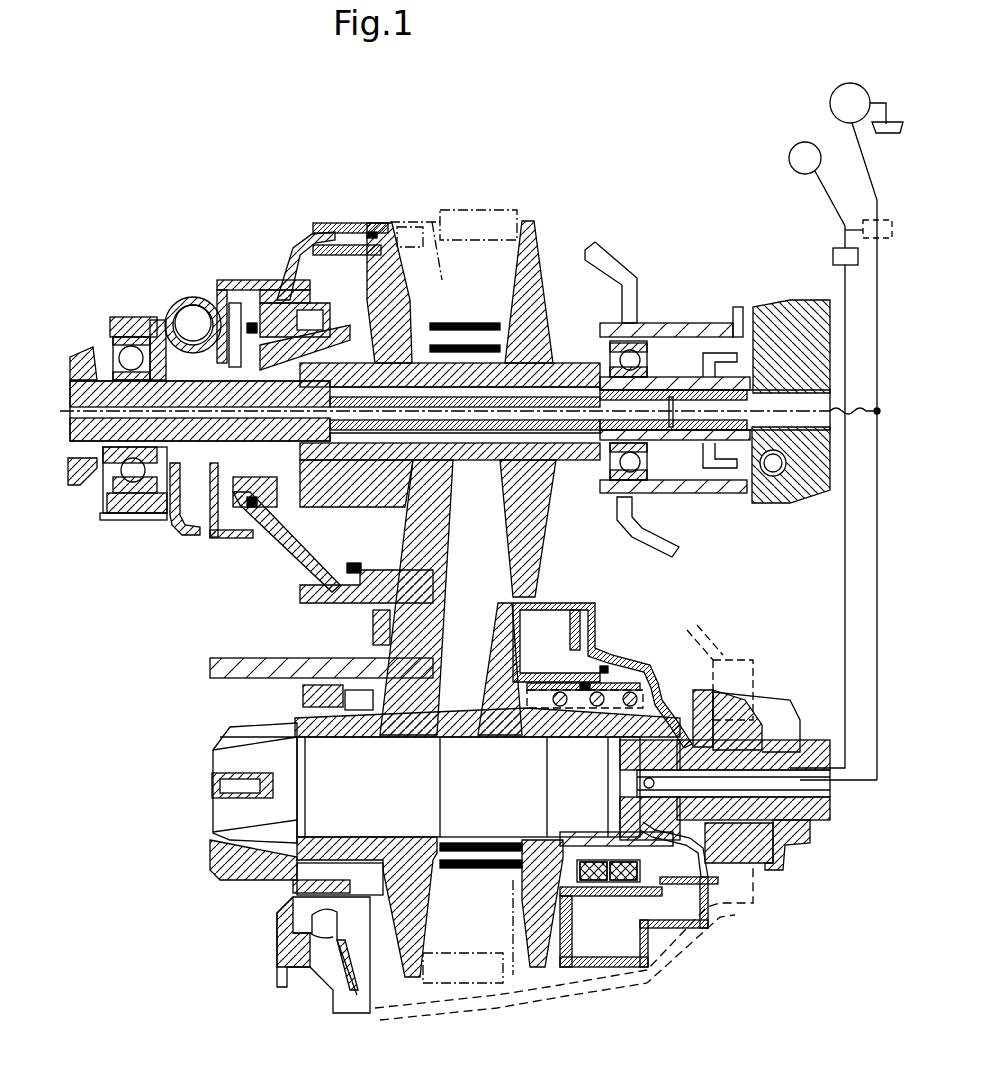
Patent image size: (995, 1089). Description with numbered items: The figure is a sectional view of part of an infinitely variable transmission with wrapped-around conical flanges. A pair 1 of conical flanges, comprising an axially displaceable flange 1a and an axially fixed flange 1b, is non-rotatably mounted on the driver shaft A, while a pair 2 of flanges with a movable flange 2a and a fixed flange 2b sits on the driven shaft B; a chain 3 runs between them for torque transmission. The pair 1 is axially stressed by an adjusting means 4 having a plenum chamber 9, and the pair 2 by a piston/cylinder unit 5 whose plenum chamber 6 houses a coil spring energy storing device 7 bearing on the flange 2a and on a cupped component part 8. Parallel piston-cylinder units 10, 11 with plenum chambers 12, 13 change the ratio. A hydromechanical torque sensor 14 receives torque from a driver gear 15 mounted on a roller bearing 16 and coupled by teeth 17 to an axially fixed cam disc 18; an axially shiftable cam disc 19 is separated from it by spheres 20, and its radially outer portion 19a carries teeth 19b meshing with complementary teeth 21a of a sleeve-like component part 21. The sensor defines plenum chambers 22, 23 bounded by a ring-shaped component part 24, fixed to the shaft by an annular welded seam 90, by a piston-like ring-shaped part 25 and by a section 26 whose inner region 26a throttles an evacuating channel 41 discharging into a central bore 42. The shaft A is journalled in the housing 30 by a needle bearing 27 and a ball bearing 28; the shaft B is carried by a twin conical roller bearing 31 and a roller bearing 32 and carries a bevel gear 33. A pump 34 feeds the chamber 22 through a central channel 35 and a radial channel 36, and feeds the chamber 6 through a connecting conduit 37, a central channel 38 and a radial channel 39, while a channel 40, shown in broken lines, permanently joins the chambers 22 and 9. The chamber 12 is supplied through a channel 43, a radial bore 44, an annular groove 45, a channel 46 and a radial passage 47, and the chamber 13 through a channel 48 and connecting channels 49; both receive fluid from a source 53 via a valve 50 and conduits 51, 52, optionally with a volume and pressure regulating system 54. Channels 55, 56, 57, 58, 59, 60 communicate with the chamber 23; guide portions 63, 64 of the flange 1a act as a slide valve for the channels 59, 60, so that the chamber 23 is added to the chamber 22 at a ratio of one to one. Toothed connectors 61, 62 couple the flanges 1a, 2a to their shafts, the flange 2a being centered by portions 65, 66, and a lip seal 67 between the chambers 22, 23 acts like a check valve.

The pair of conical flanges 1 is at (466, 575).
The axially displaceable conical flange 1a is at (358, 278).
The axially fixed conical flange 1b is at (505, 258).
The pair of conical flanges 2 is at (473, 990).
The axially movable conical flange 2a is at (533, 885).
The axially fixed conical flange 2b is at (413, 937).
The chain 3 is at (455, 870).
The adjusting means 4 is at (318, 560).
The adjusting means 5 is at (601, 672).
The plenum chamber 6 is at (690, 648).
The energy storing device 7 is at (648, 665).
The cupped component part 8 is at (646, 790).
The plenum chamber 9 is at (392, 548).
The piston-cylinder unit 10 is at (318, 228).
The piston-cylinder unit 11 is at (592, 592).
The plenum chamber 12 is at (398, 260).
The plenum chamber 13 is at (541, 623).
The torque sensor 14 is at (170, 560).
The driver gear 15 is at (128, 320).
The roller bearing 16 is at (118, 340).
The teeth 17 is at (157, 520).
The cam disc 18 is at (190, 300).
The cam disc 19 is at (232, 300).
The radially outer portion 19a is at (248, 282).
The teeth 19b is at (248, 540).
The spheres 20 is at (193, 318).
The sleeve-like component part 21 is at (345, 252).
The complementary teeth 21a is at (258, 282).
The plenum chamber 22 is at (222, 282).
The plenum chamber 23 is at (275, 303).
The ring-shaped component part 24 is at (310, 248).
The ring-shaped component part 25 is at (232, 305).
The component part 26 is at (152, 320).
The inner region 26a is at (160, 340).
The needle bearing 27 is at (80, 350).
The ball bearing 28 is at (628, 348).
The housing 30 is at (317, 907).
The twin conical roller bearing 31 is at (735, 862).
The roller bearing 32 is at (317, 868).
The bevel gear 33 is at (232, 815).
The pump 34 is at (850, 83).
The central channel 35 is at (650, 372).
The radial channel 36 is at (195, 530).
The connecting conduit 37 is at (866, 782).
The central channel 38 is at (822, 782).
The radially extending channel 39 is at (649, 833).
The channel 40 is at (240, 295).
The evacuating channel 41 is at (112, 470).
The central bore 42 is at (60, 435).
The channel 43 is at (608, 470).
The radial bore 44 is at (322, 462).
The annular groove 45 is at (257, 548).
The channel 46 is at (370, 232).
The radial passage 47 is at (300, 260).
The channel 48 is at (787, 852).
The connecting channels 49 is at (745, 703).
The valve 50 is at (838, 252).
The connecting conduit 51 is at (830, 302).
The connecting conduit 52 is at (845, 560).
The source of pressurized fluid 53 is at (805, 141).
The volume and pressure regulating system 54 is at (866, 220).
The channel 55 is at (276, 520).
The channel 56 is at (232, 512).
The channel 57 is at (428, 360).
The channel 58 is at (510, 392).
The channel 59 is at (440, 320).
The radial bore 60 is at (465, 345).
The toothed connector 61 is at (380, 472).
The toothed connector 62 is at (567, 733).
The centering portion 63 is at (340, 472).
The centering portion 64 is at (455, 325).
The centering portion 65 is at (647, 737).
The centering portion 66 is at (705, 690).
The lip seal 67 is at (235, 500).
The welded seam 90 is at (70, 410).
The driver shaft A is at (137, 472).
The driven shaft B is at (310, 757).